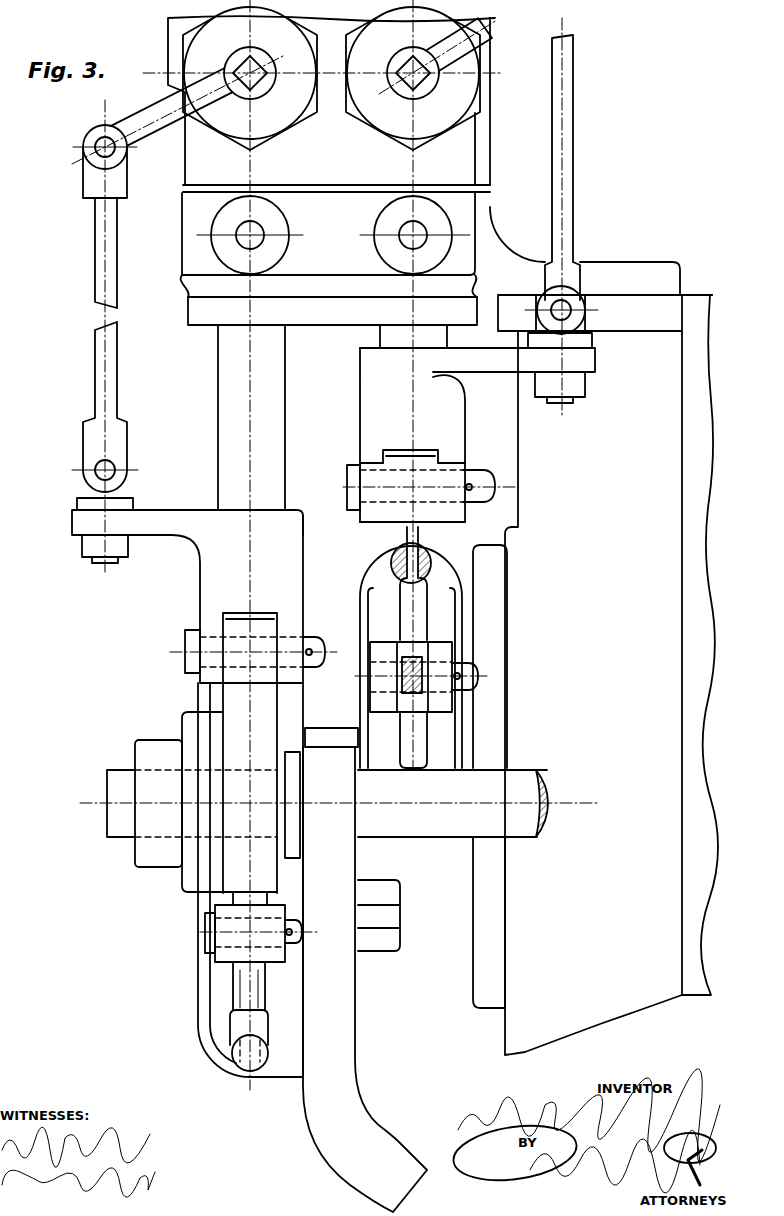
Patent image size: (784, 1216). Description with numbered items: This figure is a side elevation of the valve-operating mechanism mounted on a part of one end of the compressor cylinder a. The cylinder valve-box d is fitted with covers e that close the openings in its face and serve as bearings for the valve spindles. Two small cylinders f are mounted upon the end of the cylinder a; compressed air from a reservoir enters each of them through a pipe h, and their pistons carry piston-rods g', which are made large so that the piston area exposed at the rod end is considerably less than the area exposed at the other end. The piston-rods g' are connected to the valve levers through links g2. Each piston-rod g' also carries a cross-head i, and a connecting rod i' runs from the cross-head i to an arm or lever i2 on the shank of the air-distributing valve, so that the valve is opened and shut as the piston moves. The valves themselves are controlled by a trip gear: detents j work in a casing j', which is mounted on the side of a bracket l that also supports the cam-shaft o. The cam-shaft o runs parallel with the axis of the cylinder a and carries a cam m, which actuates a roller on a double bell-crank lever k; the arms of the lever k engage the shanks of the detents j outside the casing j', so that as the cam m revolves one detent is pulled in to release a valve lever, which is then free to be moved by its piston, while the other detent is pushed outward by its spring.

The compressor cylinder end a is at (700, 553).
The cylinder valve-box d is at (593, 675).
The covers e is at (490, 776).
The small cylinders f is at (336, 174).
The pipe h is at (258, 232).
The cross-head i is at (322, 448).
The connecting rod i' is at (327, 263).
The arm or lever i2 is at (144, 121).
The piston-rods g' is at (309, 504).
The links g2 is at (392, 468).
The detents j is at (354, 808).
The casing j' is at (313, 712).
The double bell-crank levers k is at (401, 663).
The bracket l is at (345, 1000).
The cam m is at (192, 867).
The cam-shaft o is at (115, 812).